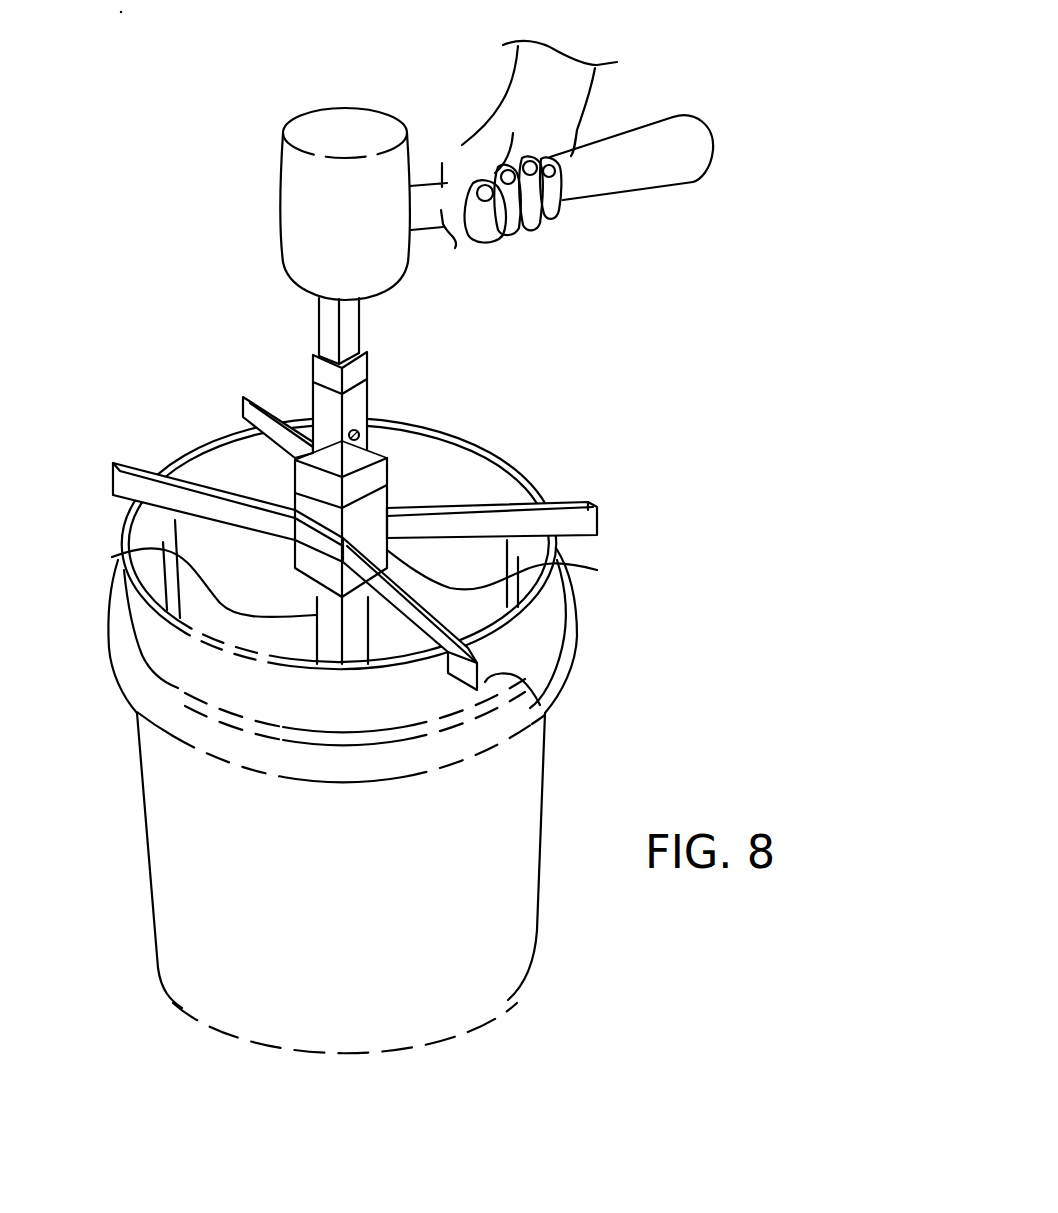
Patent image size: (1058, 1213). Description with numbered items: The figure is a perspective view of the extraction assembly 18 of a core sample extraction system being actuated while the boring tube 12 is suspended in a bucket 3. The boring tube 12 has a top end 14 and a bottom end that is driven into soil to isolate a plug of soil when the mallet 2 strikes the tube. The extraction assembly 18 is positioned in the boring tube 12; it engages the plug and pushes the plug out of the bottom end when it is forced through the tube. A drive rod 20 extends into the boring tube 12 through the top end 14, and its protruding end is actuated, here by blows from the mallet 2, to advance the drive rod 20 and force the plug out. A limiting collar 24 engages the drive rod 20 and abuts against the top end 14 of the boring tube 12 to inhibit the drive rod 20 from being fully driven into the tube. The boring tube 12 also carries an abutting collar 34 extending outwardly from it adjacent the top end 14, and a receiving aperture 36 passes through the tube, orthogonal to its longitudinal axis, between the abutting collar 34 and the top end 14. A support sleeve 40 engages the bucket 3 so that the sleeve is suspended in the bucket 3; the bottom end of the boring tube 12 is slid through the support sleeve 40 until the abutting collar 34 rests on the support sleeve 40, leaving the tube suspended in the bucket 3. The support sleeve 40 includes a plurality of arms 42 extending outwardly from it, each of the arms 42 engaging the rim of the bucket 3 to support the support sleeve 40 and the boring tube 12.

The mallet 2 is at (360, 108).
The bucket 3 is at (545, 935).
The boring tube 12 is at (112, 557).
The top end 14 is at (377, 403).
The extraction assembly 18 is at (313, 349).
The drive rod 20 is at (318, 323).
The limiting collar 24 is at (360, 368).
The abutting collar 34 is at (388, 473).
The receiving aperture 36 is at (359, 435).
The support sleeve 40 is at (513, 573).
The arms 42 is at (137, 465).